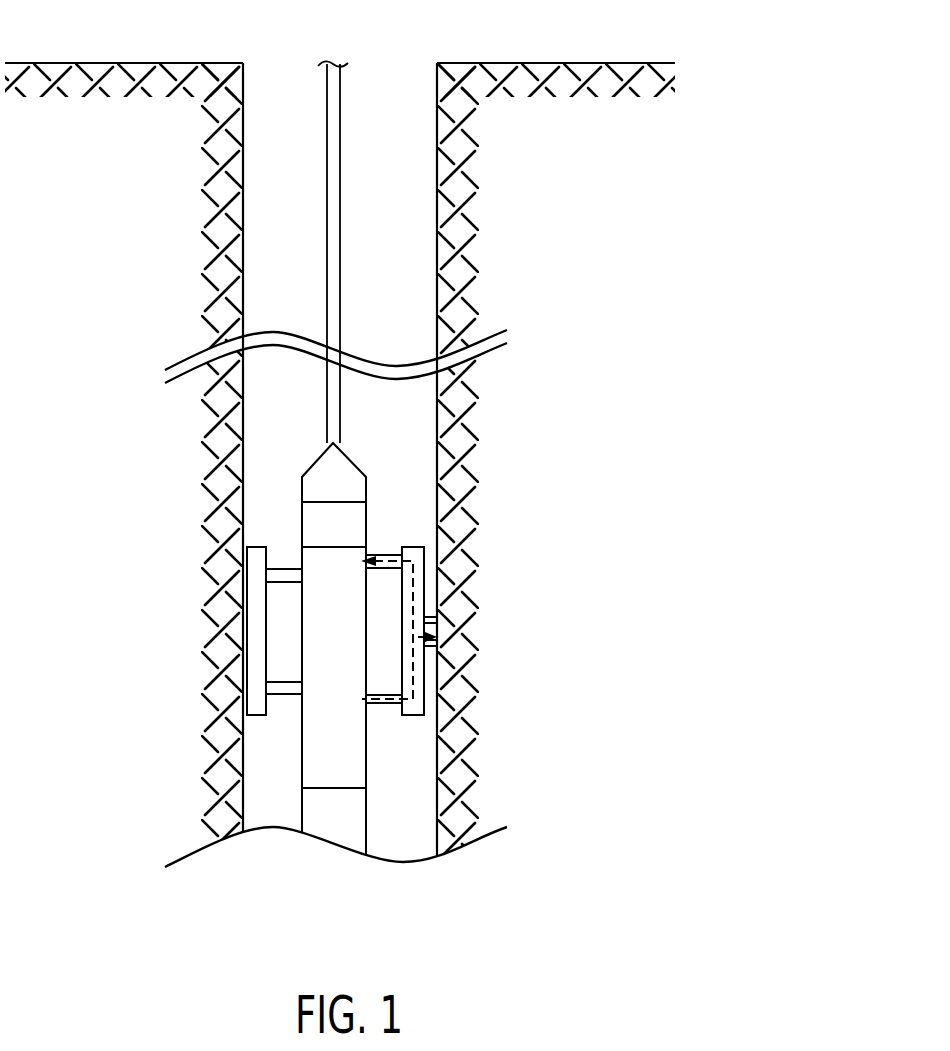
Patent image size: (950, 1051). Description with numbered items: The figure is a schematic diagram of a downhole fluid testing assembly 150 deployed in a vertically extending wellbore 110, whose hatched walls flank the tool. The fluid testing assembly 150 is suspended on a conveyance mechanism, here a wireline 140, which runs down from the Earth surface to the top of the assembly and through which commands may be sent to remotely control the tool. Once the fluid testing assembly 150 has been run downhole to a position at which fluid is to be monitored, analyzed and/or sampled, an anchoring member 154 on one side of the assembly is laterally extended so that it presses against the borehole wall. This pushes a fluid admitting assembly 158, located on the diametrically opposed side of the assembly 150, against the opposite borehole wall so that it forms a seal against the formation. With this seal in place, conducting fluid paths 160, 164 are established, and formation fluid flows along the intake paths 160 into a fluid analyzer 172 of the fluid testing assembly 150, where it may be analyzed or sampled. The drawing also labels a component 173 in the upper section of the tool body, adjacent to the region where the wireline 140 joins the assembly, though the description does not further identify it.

The wellbore 110 is at (437, 93).
The wireline 140 is at (340, 210).
The fluid testing assembly 150 is at (372, 489).
The telemetry instrument 173 is at (302, 527).
The fluid analyzer 172 is at (302, 630).
The anchoring member 154 is at (256, 684).
The intake paths 160 is at (413, 590).
The fluid admitting assembly 158 is at (422, 632).
The conducting fluid path 164 is at (413, 665).